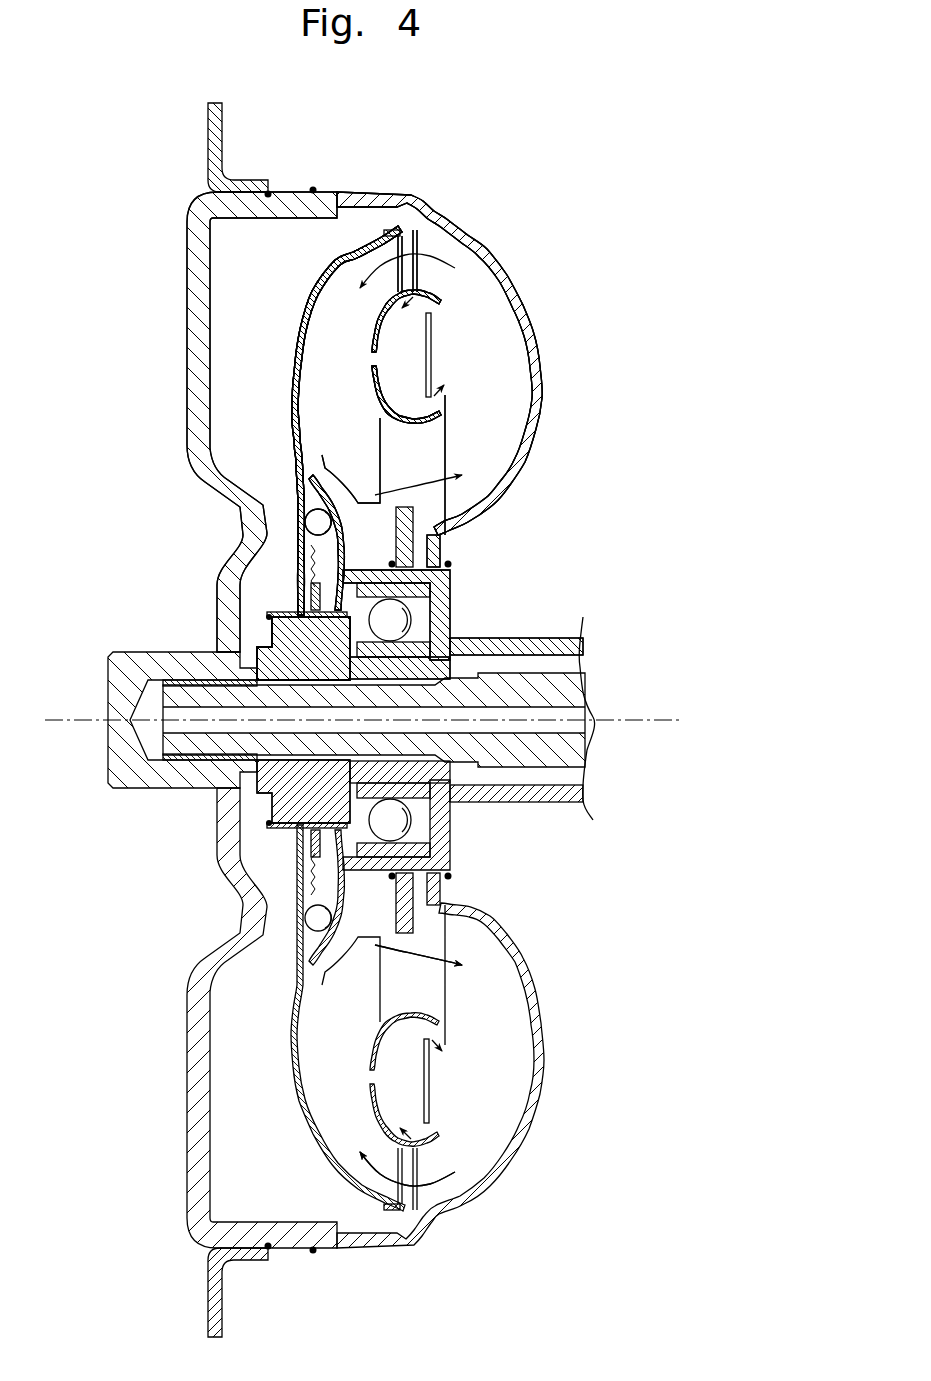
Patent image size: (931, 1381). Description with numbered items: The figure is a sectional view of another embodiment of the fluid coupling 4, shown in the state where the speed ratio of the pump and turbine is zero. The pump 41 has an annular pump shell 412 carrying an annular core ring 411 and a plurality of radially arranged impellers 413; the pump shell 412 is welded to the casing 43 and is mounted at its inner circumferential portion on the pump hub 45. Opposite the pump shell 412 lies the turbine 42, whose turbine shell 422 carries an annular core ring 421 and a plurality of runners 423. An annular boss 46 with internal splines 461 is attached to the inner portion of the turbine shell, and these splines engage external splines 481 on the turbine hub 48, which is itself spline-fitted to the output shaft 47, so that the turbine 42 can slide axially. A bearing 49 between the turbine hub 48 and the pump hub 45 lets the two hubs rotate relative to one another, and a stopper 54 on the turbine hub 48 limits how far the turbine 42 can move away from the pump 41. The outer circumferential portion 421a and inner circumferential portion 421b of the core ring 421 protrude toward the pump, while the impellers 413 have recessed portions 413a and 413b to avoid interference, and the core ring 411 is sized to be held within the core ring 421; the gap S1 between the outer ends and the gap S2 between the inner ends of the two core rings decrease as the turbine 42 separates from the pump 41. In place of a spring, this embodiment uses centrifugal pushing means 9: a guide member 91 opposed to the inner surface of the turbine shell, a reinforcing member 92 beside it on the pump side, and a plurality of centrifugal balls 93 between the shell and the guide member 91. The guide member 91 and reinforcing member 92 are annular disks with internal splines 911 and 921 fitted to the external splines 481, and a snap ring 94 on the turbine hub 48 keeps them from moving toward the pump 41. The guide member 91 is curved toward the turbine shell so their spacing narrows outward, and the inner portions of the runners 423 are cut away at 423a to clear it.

The fluid coupling 4 is at (358, 720).
The pump 41 is at (492, 240).
The core ring 411 is at (445, 335).
The pump shell 412 is at (541, 382).
The impellers 413 is at (496, 462).
The recessed portion 413a is at (400, 322).
The recessed portion 413b is at (437, 400).
The turbine 42 is at (310, 293).
The core ring 421 is at (373, 323).
The outer circumferential portion 421a is at (443, 303).
The inner circumferential portion 421b is at (440, 420).
The turbine shell 422 is at (292, 369).
The runners 423 is at (340, 437).
The cut-away portion 423a is at (296, 461).
The casing 43 is at (200, 300).
The pump hub 45 is at (451, 596).
The boss 46 is at (300, 601).
The internal splines 461 is at (240, 650).
The output shaft 47 is at (536, 765).
The turbine hub 48 is at (163, 677).
The external splines 481 is at (298, 612).
The bearing 49 is at (440, 638).
The stopper 54 is at (266, 617).
The centrifugal pushing means 9 is at (290, 497).
The guide member 91 is at (330, 547).
The internal splines 911 is at (303, 648).
The reinforcing member 92 is at (442, 546).
The internal splines 921 is at (400, 679).
The centrifugal balls 93 is at (316, 523).
The snap ring 94 is at (272, 825).
The gap S1 is at (427, 1127).
The gap S2 is at (412, 1027).